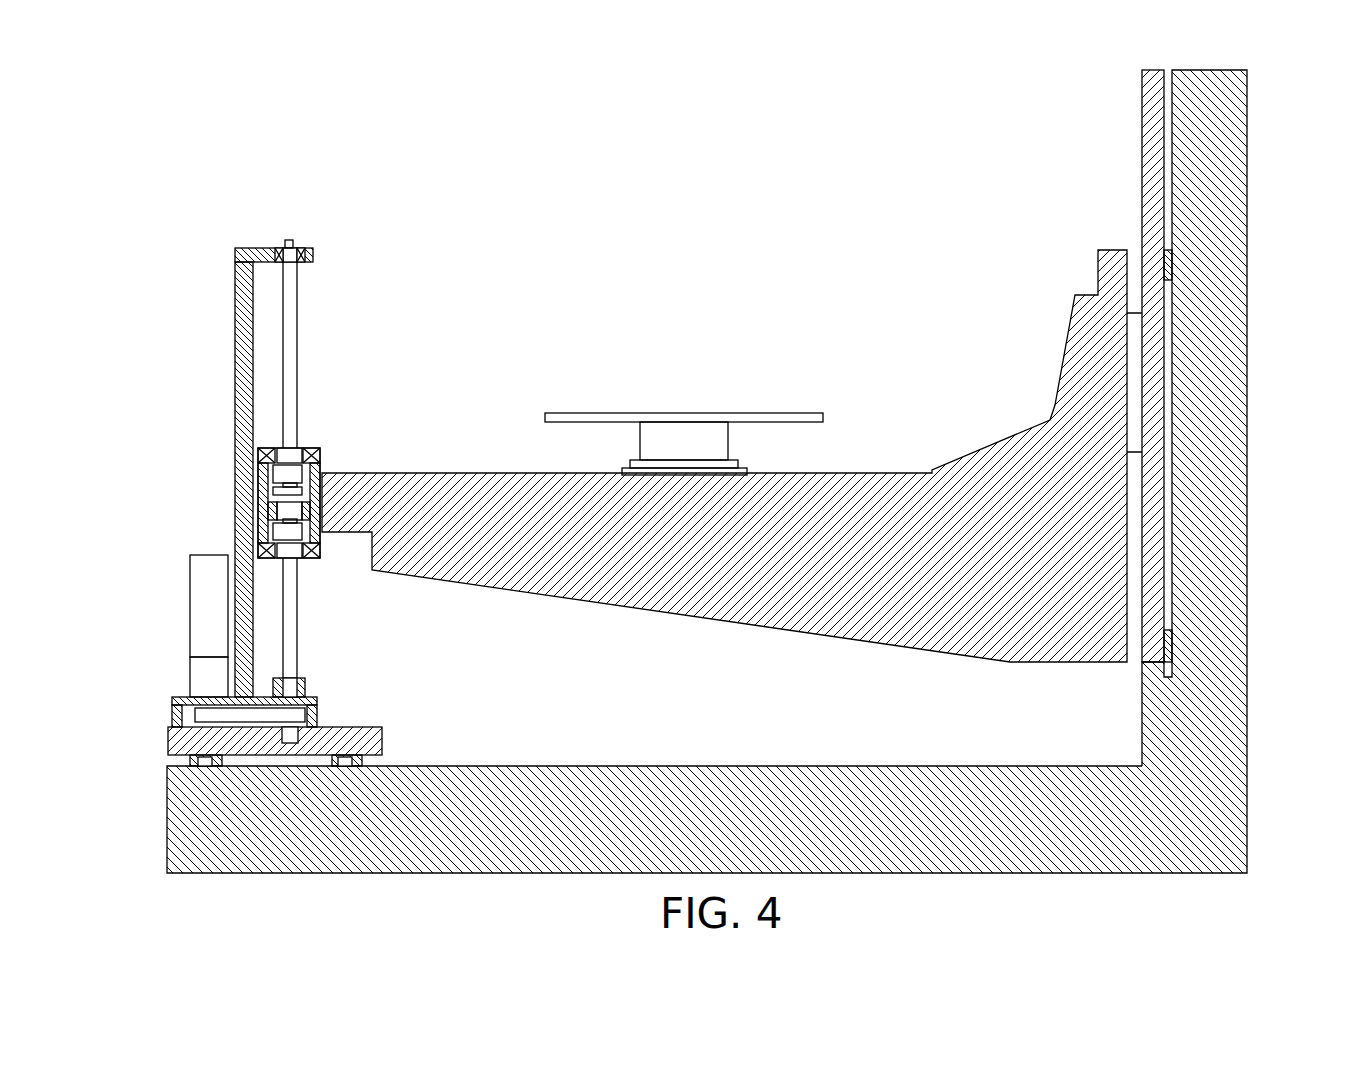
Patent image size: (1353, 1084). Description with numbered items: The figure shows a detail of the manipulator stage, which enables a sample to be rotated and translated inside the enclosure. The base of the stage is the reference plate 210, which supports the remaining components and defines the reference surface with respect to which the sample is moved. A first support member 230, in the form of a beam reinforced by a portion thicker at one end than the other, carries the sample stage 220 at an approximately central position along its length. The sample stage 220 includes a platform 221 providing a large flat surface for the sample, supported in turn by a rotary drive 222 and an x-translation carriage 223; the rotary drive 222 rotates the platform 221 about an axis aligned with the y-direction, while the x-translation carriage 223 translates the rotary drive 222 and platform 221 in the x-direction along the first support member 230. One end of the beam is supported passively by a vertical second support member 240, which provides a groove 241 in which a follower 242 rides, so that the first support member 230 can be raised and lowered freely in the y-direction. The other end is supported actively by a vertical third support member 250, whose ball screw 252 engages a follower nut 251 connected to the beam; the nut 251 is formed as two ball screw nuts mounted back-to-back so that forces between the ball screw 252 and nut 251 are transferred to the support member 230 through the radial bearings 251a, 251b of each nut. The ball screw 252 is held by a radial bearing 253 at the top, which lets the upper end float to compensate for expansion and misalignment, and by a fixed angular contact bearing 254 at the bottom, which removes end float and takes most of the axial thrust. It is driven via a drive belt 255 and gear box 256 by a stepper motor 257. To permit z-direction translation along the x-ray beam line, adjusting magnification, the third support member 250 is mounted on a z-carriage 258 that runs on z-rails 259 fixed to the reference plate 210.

The reference plate 210 is at (175, 820).
The sample stage 220 is at (745, 383).
The platform 221 is at (675, 413).
The rotary drive 222 is at (660, 432).
The x-translation carriage 223 is at (625, 465).
The first support member 230 is at (882, 495).
The second support member 240 is at (1225, 355).
The groove 241 is at (1168, 125).
The follower 242 is at (1168, 252).
The third support member 250 is at (240, 350).
The follower nut 251 is at (322, 478).
The radial bearing 251a is at (320, 450).
The radial bearing 251b is at (310, 560).
The ball screw 252 is at (300, 360).
The radial bearing 253 is at (300, 246).
The fixed angular contact bearing 254 is at (305, 685).
The drive belt 255 is at (210, 715).
The gear box 256 is at (197, 680).
The stepper motor 257 is at (200, 605).
The z-carriage 258 is at (372, 735).
The z-rails 259 is at (347, 755).